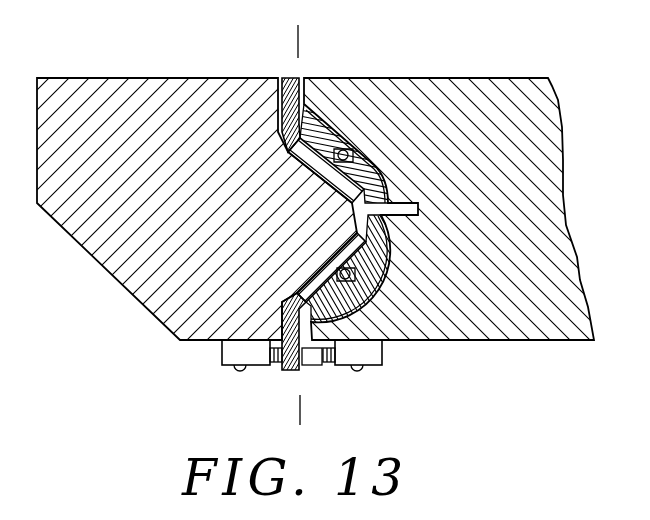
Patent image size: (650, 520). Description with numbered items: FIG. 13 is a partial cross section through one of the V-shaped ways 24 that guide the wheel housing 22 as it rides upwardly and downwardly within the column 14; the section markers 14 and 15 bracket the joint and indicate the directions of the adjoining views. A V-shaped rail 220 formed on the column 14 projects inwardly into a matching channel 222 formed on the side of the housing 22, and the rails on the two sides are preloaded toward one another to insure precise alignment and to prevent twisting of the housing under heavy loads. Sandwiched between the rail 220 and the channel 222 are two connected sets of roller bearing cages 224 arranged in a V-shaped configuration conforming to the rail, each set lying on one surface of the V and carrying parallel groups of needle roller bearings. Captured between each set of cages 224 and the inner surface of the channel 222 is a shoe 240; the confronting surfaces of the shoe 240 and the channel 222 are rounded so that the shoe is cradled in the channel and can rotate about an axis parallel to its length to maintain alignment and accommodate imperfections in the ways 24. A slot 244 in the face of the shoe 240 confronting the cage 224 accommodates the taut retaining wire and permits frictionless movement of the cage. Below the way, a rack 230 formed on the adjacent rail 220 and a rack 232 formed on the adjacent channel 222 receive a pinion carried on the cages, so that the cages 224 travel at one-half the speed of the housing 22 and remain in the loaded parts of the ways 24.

The column 14 is at (196, 78).
The section line indicator 15 is at (322, 30).
The housing 22 is at (563, 203).
The ways 24 is at (406, 55).
The V-shaped rail 220 is at (271, 224).
The channel 222 is at (368, 146).
The roller bearing cage 224 is at (322, 170).
The rack 230 is at (232, 367).
The rack 232 is at (367, 367).
The shoe 240 is at (337, 110).
The slot 244 is at (373, 155).